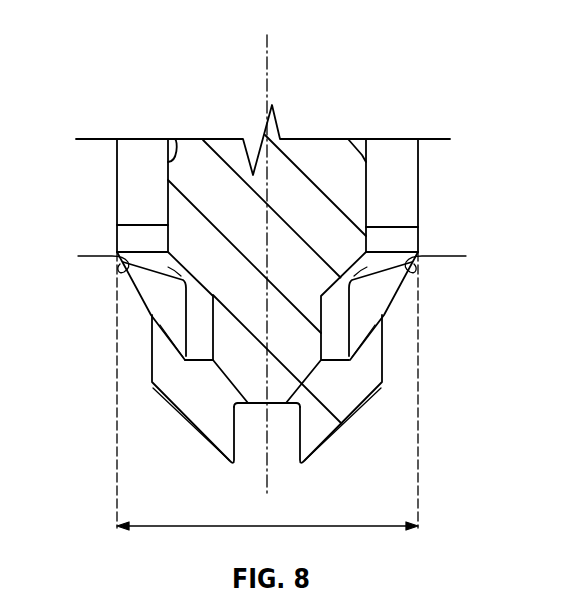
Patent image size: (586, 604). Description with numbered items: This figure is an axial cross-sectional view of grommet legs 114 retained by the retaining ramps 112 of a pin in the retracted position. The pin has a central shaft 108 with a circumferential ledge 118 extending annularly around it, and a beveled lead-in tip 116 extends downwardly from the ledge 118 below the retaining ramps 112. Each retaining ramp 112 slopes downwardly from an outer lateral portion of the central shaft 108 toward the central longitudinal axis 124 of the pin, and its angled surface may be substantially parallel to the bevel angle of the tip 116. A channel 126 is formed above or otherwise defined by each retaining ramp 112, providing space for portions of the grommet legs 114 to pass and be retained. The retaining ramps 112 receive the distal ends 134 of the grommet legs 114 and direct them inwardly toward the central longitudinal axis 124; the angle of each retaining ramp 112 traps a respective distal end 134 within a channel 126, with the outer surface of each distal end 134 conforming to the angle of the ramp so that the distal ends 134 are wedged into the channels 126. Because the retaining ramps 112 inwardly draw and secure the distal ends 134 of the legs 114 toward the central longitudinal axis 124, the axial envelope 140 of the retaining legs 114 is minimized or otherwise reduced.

The central shaft 108 is at (357, 197).
The retaining ramp 112 is at (148, 317).
The grommet leg 114 is at (150, 285).
The lead-in tip 116 is at (344, 426).
The circumferential ledge 118 is at (385, 381).
The central longitudinal axis 124 is at (268, 62).
The channel 126 is at (182, 275).
The distal end 134 is at (271, 258).
The axial envelope 140 is at (165, 523).